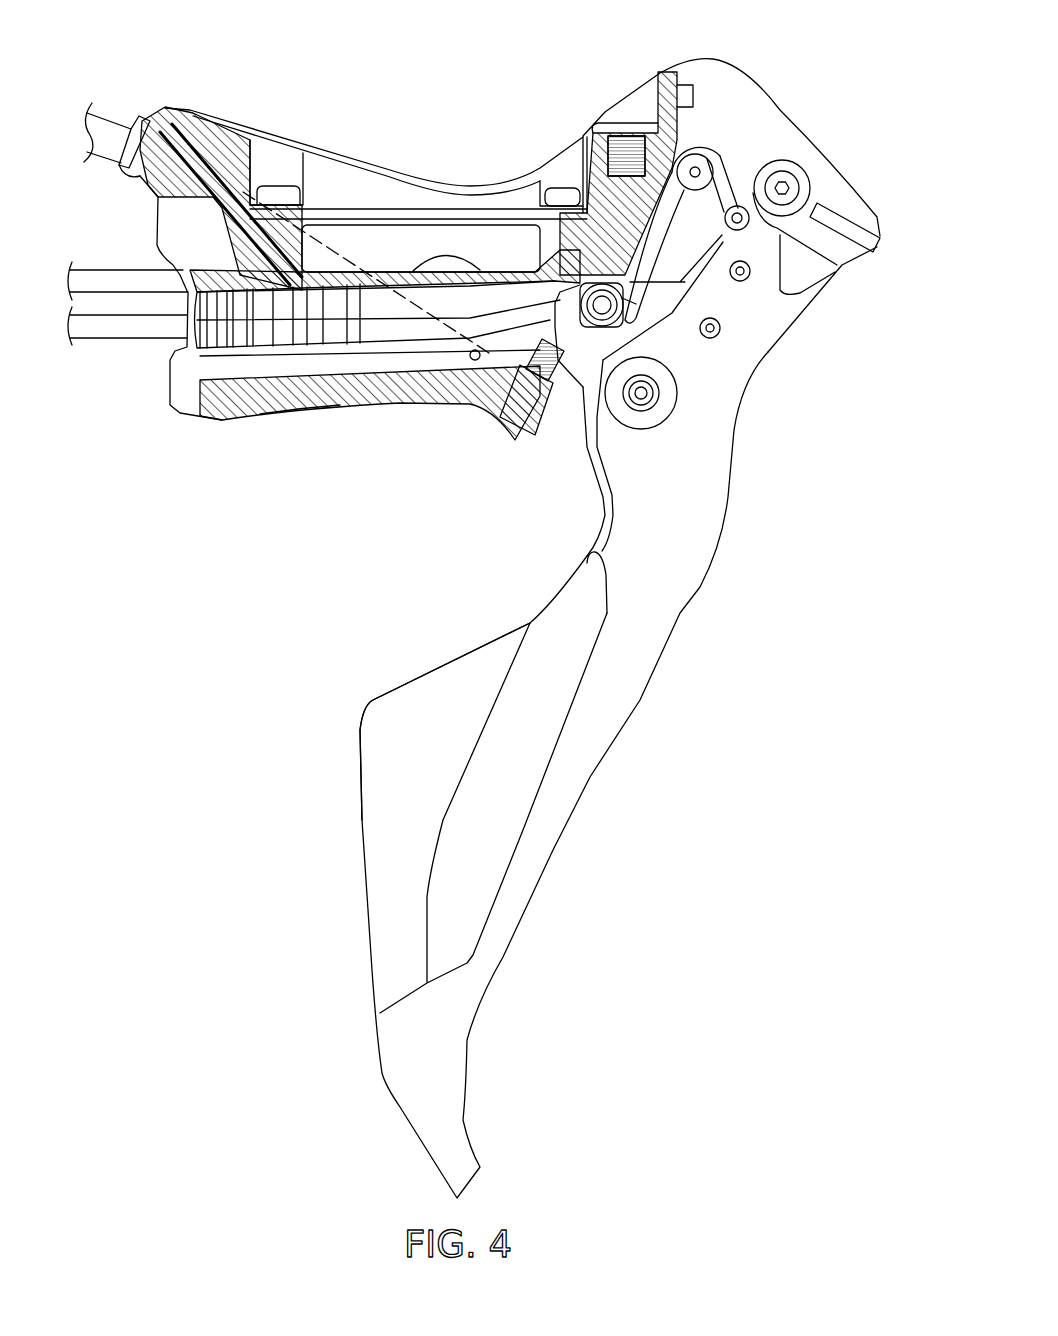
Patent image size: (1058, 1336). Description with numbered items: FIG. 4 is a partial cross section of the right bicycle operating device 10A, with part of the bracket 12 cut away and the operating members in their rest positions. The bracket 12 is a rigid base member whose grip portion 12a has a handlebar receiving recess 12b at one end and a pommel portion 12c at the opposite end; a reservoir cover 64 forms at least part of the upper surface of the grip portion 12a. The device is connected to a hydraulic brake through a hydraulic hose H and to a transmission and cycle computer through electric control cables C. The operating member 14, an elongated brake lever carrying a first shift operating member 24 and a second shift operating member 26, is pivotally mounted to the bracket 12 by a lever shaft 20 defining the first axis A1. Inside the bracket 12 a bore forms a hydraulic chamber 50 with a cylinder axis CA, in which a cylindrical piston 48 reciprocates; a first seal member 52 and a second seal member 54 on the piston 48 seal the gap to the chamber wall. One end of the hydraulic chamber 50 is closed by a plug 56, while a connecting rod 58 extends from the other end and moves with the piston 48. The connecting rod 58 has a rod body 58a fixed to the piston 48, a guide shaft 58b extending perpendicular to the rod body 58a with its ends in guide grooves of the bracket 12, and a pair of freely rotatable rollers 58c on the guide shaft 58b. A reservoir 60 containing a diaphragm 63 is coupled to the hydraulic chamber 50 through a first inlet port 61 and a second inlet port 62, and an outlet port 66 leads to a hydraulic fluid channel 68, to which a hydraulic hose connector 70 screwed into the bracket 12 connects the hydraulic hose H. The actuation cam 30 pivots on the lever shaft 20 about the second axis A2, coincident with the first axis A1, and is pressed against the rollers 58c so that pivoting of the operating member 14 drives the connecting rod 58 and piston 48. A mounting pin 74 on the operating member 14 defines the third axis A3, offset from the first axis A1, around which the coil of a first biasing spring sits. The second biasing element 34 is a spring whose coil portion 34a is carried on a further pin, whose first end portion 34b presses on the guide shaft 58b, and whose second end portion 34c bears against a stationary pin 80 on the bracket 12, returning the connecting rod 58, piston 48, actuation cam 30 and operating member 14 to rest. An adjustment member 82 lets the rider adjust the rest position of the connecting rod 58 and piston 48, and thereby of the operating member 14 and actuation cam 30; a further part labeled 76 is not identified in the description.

The bicycle operating device 10A is at (731, 118).
The bracket 12 is at (382, 408).
The grip portion 12a is at (303, 407).
The handlebar receiving recess 12b is at (193, 393).
The pommel portion 12c is at (713, 77).
The operating member 14 is at (543, 775).
The lever shaft 20 is at (660, 417).
The first shift operating member 24 is at (473, 845).
The second shift operating member 26 is at (395, 905).
The actuation cam 30 is at (567, 393).
The second biasing element 34 is at (728, 192).
The coil portion 34a is at (688, 148).
The first end portion 34b is at (638, 299).
The second end portion 34c is at (768, 244).
The piston 48 is at (345, 395).
The hydraulic chamber 50 is at (410, 362).
The first seal member 52 is at (273, 392).
The second seal member 54 is at (397, 387).
The plug 56 is at (203, 369).
The connecting rod 58 is at (620, 333).
The rod body 58a is at (507, 300).
The guide shaft 58b is at (604, 308).
The rollers 58c is at (625, 266).
The reservoir 60 is at (540, 232).
The first inlet port 61 is at (457, 263).
The second inlet port 62 is at (337, 272).
The diaphragm 63 is at (357, 240).
The reservoir cover 64 is at (513, 168).
The outlet port 66 is at (477, 361).
The hydraulic fluid channel 68 is at (335, 212).
The hydraulic hose connector 70 is at (128, 172).
The mounting pin 74 is at (713, 157).
The housing portion 76 is at (797, 301).
The stationary pin 80 is at (761, 166).
The adjustment member 82 is at (522, 413).
The hydraulic hose H is at (117, 121).
The electric control cables C is at (120, 292).
The cylinder axis CA is at (338, 385).
The first axis A1 is at (675, 432).
The second axis A2 is at (650, 400).
The third axis A3 is at (706, 338).